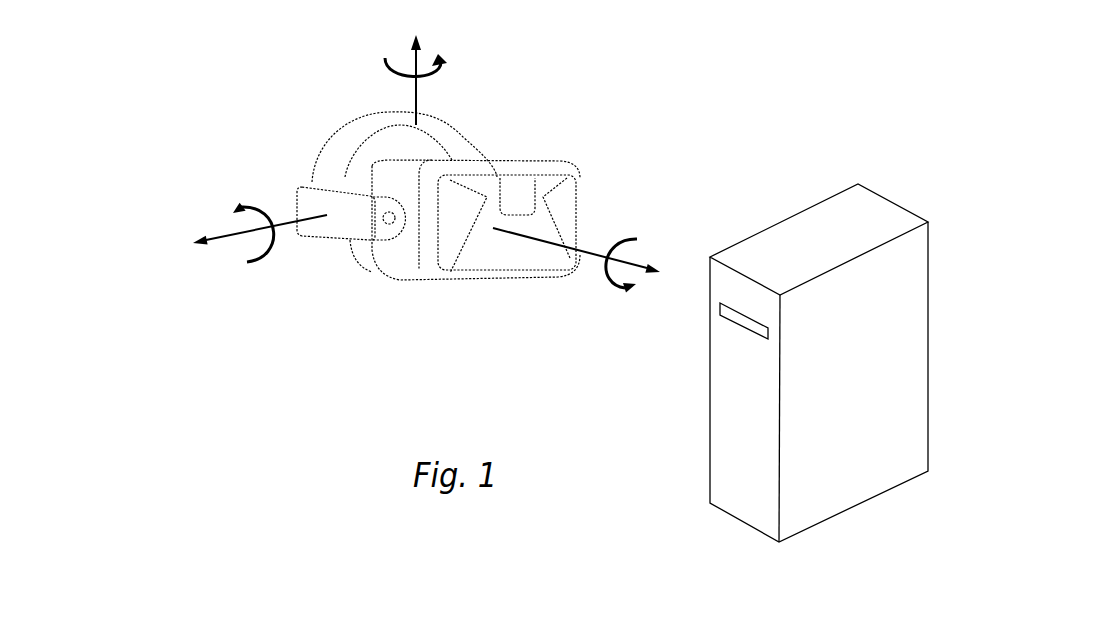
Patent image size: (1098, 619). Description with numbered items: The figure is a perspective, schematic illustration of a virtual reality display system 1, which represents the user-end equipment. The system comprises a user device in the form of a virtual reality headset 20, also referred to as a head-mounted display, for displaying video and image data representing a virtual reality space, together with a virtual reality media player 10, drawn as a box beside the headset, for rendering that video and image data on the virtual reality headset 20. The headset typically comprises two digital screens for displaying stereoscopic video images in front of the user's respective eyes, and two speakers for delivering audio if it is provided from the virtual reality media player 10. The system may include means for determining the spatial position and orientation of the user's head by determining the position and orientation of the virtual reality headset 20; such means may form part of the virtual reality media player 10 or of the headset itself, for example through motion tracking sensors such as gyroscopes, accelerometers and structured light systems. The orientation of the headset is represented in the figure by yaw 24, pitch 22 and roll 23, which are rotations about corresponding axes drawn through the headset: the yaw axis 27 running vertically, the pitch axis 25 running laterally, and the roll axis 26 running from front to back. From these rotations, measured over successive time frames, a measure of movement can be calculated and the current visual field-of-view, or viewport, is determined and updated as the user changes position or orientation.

The virtual reality display system 1 is at (985, 123).
The virtual reality media player 10 is at (882, 494).
The virtual reality headset 20 is at (493, 277).
The pitch 22 is at (270, 253).
The roll 23 is at (617, 230).
The yaw 24 is at (383, 65).
The pitch axis 25 is at (220, 237).
The roll axis 26 is at (587, 250).
The yaw axis 27 is at (417, 95).